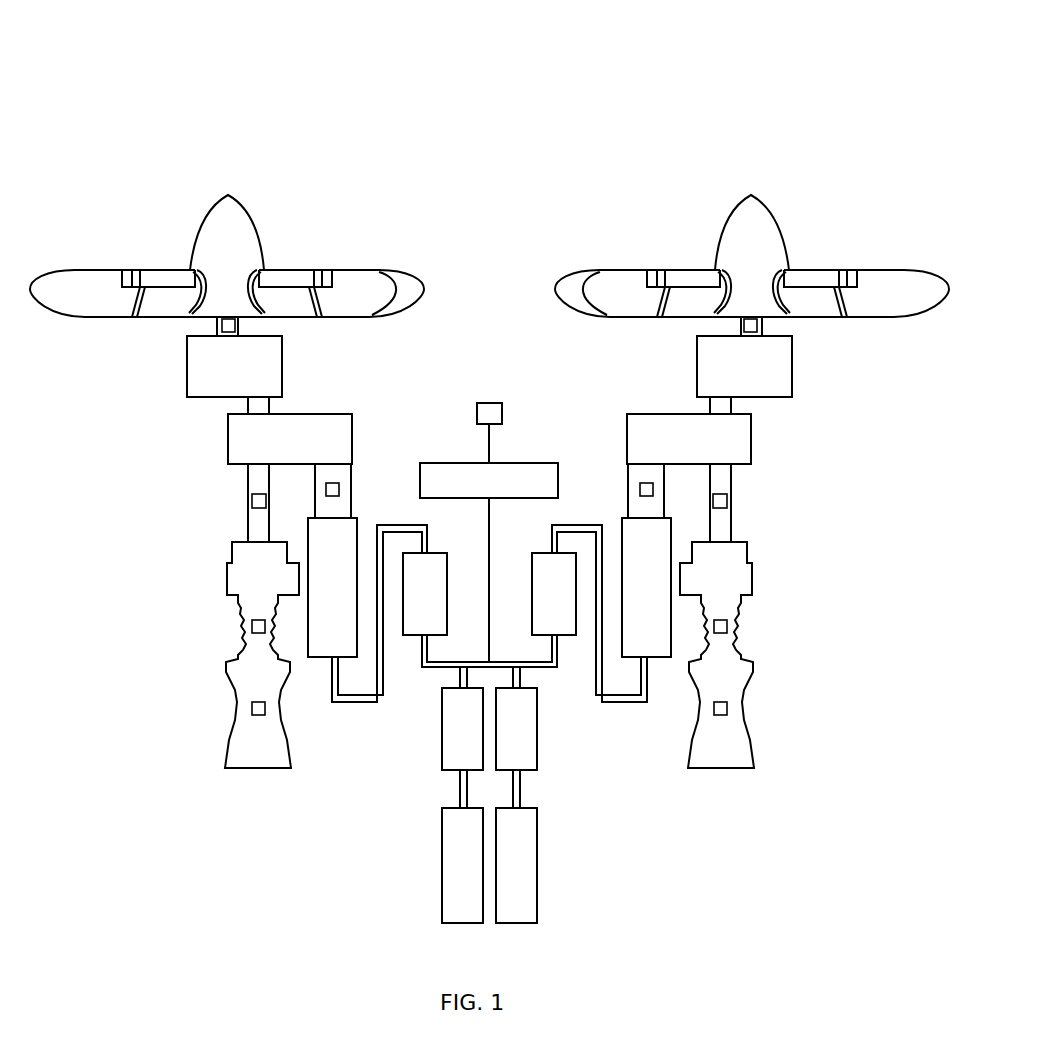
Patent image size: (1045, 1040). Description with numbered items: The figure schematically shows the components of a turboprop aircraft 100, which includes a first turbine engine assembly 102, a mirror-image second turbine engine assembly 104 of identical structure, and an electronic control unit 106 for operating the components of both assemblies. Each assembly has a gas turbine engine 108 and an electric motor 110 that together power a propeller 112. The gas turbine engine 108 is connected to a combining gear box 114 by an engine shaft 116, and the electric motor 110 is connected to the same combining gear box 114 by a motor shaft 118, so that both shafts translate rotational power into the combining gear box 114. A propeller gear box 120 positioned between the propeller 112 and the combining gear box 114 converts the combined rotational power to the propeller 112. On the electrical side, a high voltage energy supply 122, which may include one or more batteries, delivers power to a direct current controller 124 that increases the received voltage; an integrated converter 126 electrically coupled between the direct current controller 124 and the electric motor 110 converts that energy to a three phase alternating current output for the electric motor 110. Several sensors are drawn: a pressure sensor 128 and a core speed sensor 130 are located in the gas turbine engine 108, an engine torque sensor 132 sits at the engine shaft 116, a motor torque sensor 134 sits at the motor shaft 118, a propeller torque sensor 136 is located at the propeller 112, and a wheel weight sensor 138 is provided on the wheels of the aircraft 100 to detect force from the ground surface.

The aircraft 100 is at (140, 95).
The first turbine engine assembly 102 is at (143, 200).
The second turbine engine assembly 104 is at (837, 198).
The electronic control unit 106 is at (528, 463).
The gas turbine engine 108 is at (235, 742).
The electric motor 110 is at (315, 657).
The propeller 112 is at (357, 270).
The combining gear box 114 is at (228, 438).
The engine shaft 116 is at (248, 528).
The motor shaft 118 is at (351, 505).
The propeller gear box 120 is at (282, 367).
The high voltage energy supply 122 is at (442, 865).
The direct current controller 124 is at (442, 729).
The integrated converter 126 is at (415, 636).
The pressure sensor 128 is at (252, 627).
The core speed sensor 130 is at (252, 708).
The engine torque sensor 132 is at (252, 500).
The motor torque sensor 134 is at (339, 490).
The propeller torque sensor 136 is at (222, 327).
The wheel weight sensor 138 is at (489, 403).